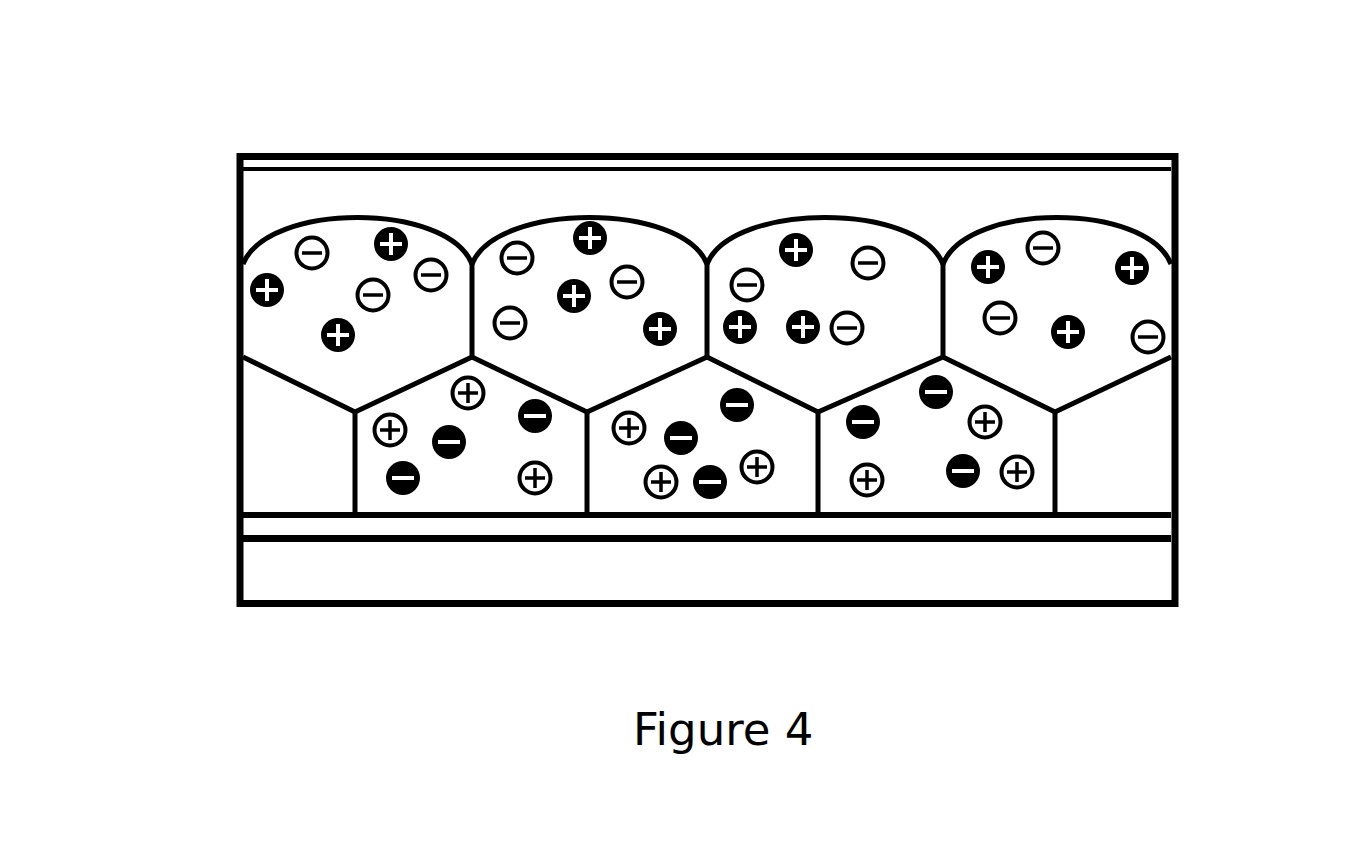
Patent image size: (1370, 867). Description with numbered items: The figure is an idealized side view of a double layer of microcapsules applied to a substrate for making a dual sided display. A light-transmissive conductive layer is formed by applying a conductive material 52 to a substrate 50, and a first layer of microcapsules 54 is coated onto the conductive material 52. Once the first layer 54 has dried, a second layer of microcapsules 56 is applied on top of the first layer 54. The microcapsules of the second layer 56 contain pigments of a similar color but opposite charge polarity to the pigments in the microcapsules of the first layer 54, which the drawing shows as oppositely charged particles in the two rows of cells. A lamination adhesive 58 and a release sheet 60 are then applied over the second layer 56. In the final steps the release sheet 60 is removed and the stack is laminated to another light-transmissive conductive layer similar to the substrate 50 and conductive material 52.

The substrate 50 is at (237, 573).
The conductive material 52 is at (1178, 525).
The first layer of microcapsules 54 is at (1060, 449).
The second layer of microcapsules 56 is at (1180, 307).
The lamination adhesive 58 is at (237, 197).
The release sheet 60 is at (280, 153).